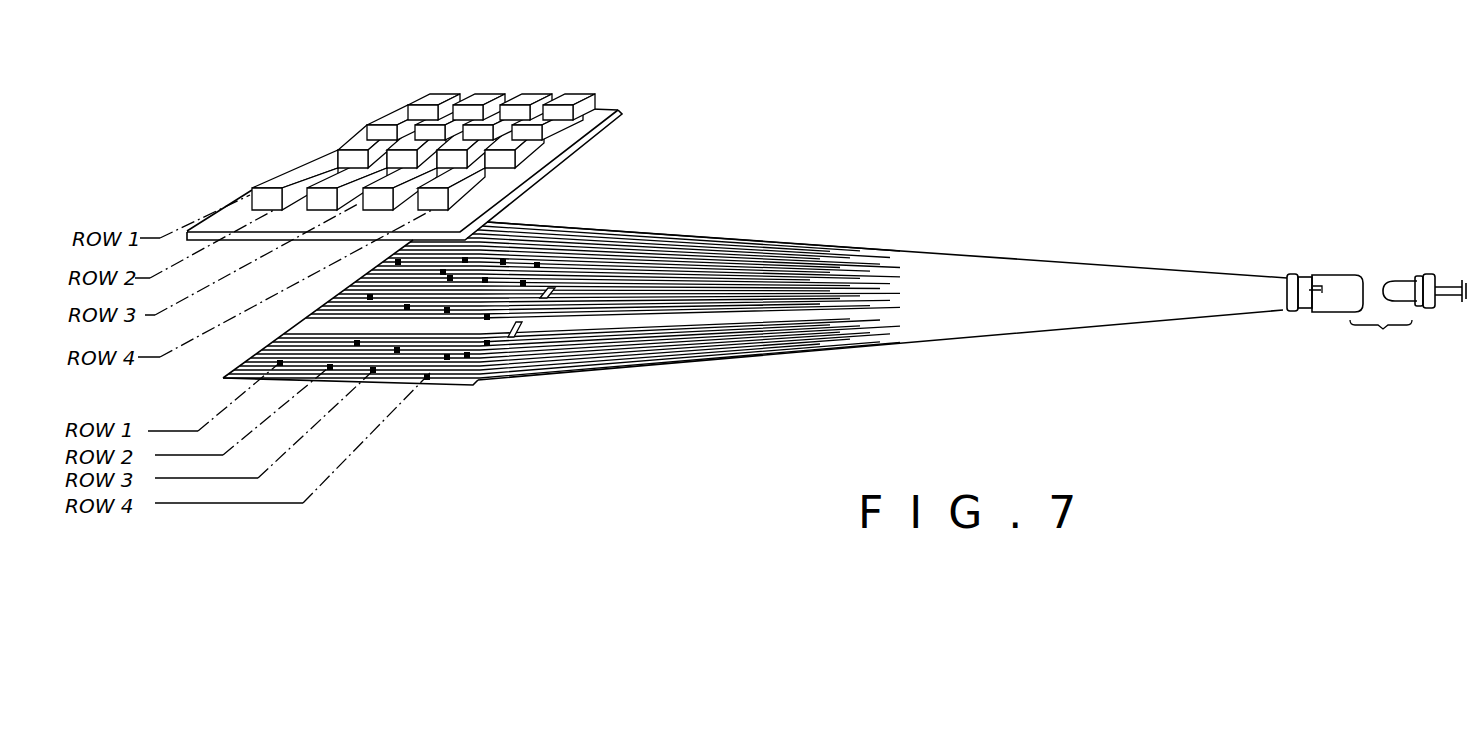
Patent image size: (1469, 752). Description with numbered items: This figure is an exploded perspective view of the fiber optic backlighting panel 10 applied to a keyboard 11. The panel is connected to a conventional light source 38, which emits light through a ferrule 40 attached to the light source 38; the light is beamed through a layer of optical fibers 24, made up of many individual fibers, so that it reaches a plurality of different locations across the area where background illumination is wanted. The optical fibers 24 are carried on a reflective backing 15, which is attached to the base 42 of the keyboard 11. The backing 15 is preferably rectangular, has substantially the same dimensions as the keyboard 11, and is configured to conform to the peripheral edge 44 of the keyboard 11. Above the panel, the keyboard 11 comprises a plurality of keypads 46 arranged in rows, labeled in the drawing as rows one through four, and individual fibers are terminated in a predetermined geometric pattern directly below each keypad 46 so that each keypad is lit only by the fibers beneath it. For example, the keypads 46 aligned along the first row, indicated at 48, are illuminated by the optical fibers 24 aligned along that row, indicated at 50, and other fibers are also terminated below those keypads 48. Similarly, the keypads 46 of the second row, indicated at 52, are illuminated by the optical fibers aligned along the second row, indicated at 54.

The backlighting panel 10 is at (478, 398).
The keyboard 11 is at (613, 125).
The reflective backing 15 is at (524, 328).
The layer of optical fibers 24 is at (547, 220).
The light source 38 is at (1417, 275).
The ferrule 40 is at (1335, 270).
The base 42 is at (545, 170).
The peripheral edge 44 is at (592, 108).
The keypads 46 is at (450, 102).
The keypads aligned along ROW 1 48 is at (272, 178).
The optical fibers aligned along ROW 1 50 is at (318, 340).
The keypads aligned along ROW 2 52 is at (338, 173).
The optical fibers aligned along ROW 2 54 is at (333, 372).